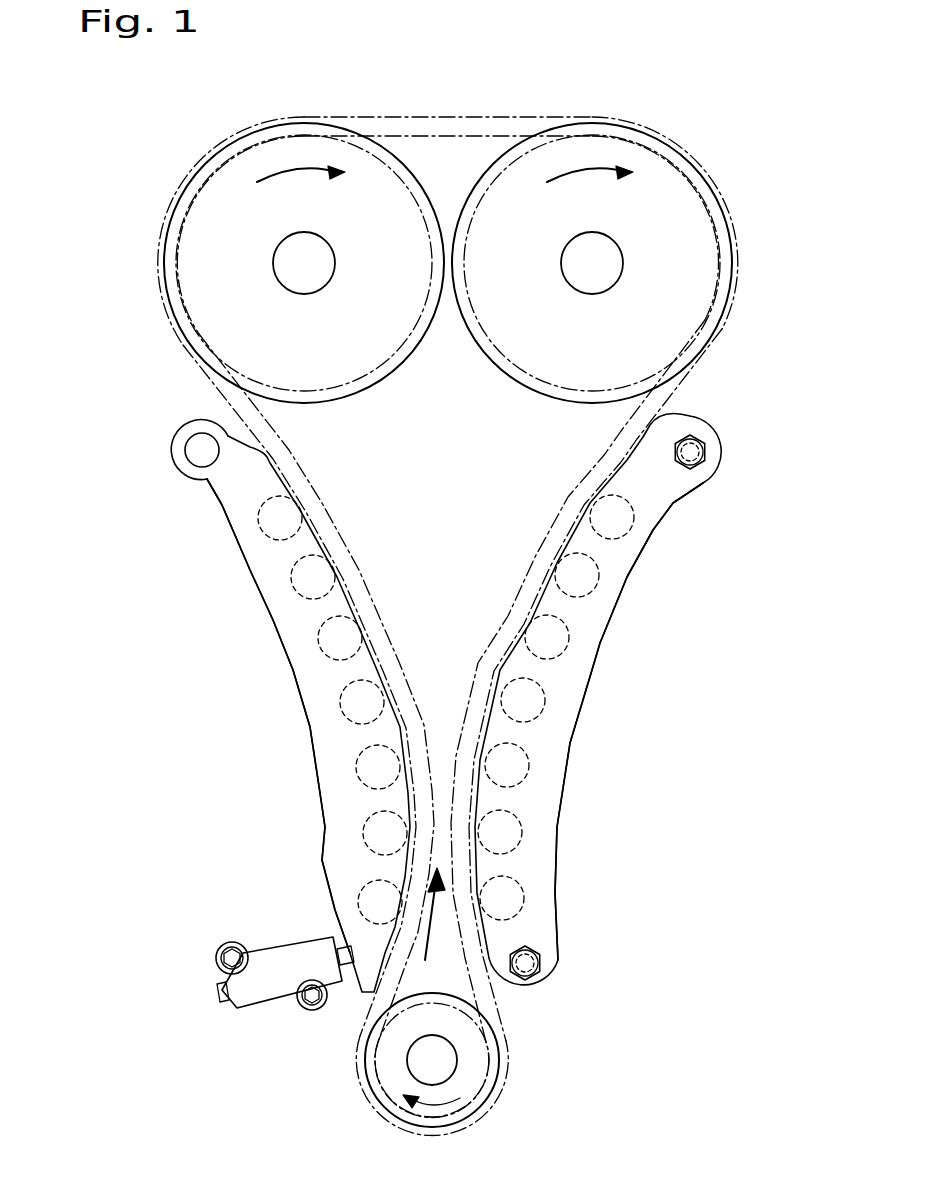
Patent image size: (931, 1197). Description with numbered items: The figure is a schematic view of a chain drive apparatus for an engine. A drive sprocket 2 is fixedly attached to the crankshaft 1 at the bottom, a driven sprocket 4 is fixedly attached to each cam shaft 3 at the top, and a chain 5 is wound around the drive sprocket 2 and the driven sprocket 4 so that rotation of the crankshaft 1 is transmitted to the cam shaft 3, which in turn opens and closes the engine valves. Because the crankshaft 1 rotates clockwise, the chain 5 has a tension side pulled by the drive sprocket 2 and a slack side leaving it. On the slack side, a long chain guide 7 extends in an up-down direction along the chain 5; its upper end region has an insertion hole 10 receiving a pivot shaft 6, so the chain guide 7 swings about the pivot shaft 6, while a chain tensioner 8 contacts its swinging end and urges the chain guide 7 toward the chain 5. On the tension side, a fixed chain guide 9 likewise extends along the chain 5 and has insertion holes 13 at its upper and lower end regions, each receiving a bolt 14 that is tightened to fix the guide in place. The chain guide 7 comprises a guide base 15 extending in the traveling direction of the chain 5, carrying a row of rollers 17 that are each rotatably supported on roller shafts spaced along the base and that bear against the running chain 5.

The crankshaft 1 is at (410, 1057).
The drive sprocket 2 is at (378, 1093).
The cam shaft 3 is at (283, 258).
The driven sprocket 4 is at (168, 250).
The chain 5 is at (212, 384).
The pivot shaft 6 is at (197, 450).
The chain guide 7 is at (249, 700).
The chain tensioner 8 is at (252, 997).
The fixed chain guide 9 is at (588, 693).
The insertion hole 10 is at (198, 462).
The insertion holes 13 is at (690, 443).
The bolt 14 is at (707, 450).
The guide base 15 is at (310, 732).
The rollers 17 is at (367, 833).